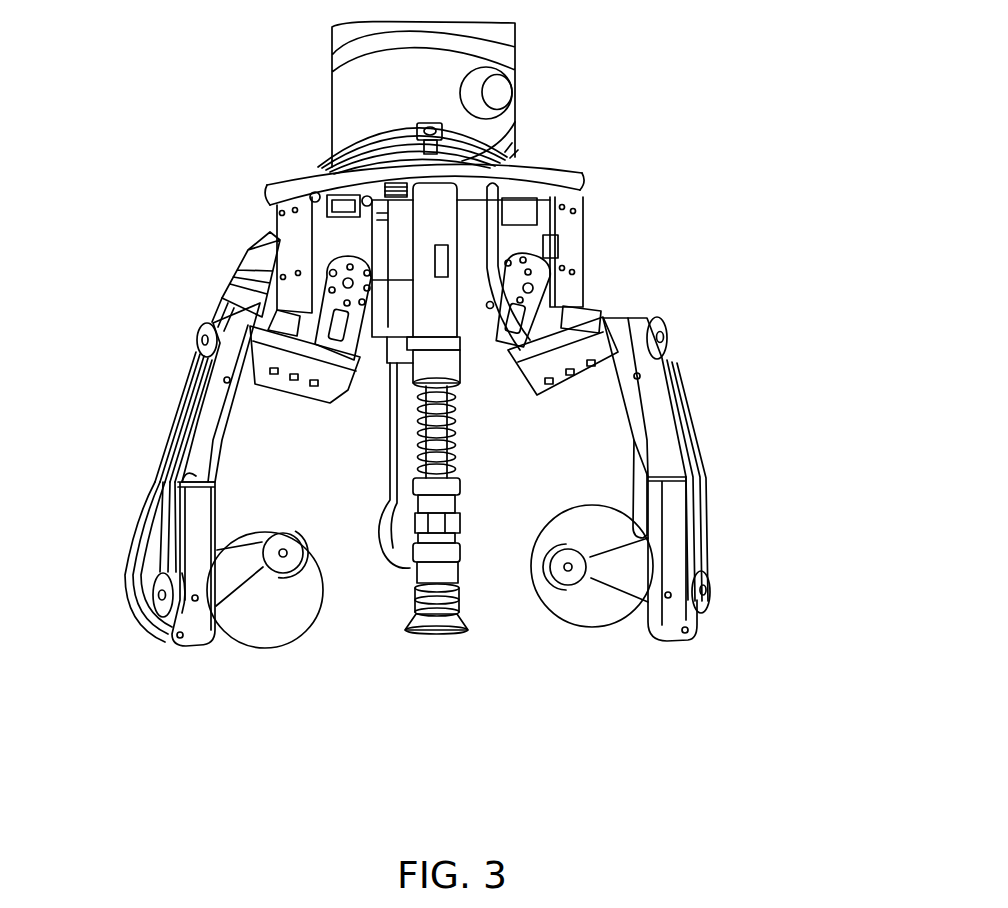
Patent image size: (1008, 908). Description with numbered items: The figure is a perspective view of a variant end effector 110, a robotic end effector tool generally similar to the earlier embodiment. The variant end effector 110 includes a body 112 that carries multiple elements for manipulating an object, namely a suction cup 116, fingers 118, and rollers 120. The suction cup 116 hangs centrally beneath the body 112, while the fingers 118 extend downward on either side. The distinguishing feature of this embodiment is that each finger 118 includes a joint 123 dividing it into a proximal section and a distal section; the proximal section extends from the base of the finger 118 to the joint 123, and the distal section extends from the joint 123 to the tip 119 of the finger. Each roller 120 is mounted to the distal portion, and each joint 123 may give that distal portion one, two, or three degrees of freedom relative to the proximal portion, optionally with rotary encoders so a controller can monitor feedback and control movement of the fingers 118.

The variant end effector 110 is at (743, 190).
The body 112 is at (552, 170).
The suction cup 116 is at (452, 588).
The fingers 118 is at (193, 493).
The tip 119 is at (200, 642).
The rollers 120 is at (267, 622).
The joint 123 is at (185, 478).